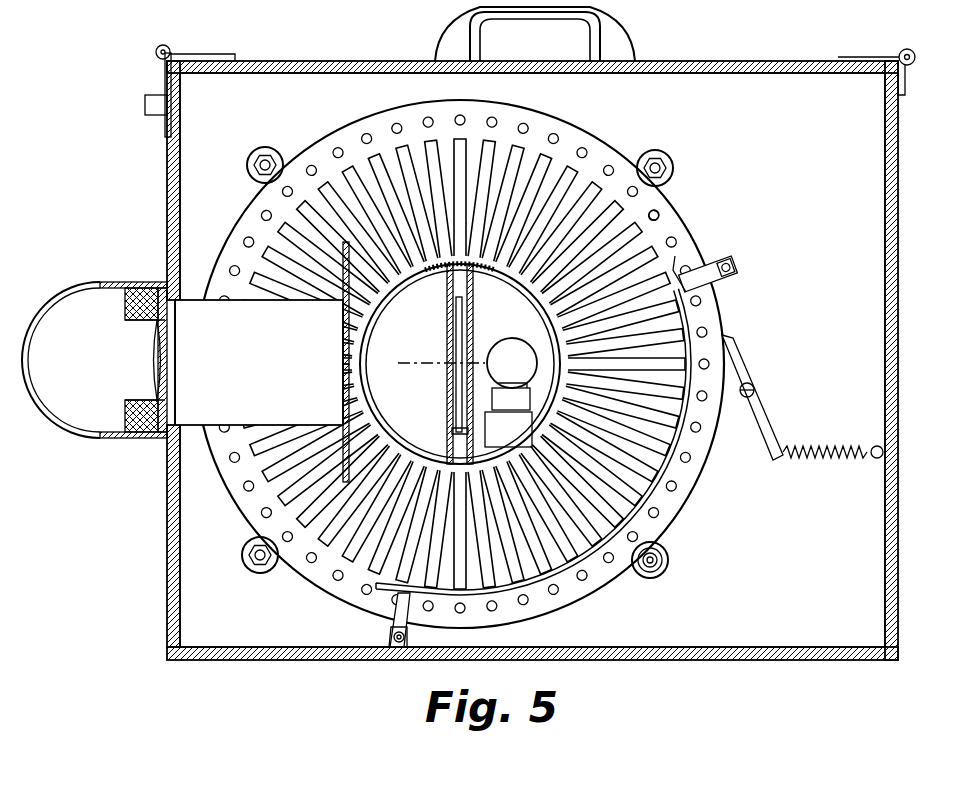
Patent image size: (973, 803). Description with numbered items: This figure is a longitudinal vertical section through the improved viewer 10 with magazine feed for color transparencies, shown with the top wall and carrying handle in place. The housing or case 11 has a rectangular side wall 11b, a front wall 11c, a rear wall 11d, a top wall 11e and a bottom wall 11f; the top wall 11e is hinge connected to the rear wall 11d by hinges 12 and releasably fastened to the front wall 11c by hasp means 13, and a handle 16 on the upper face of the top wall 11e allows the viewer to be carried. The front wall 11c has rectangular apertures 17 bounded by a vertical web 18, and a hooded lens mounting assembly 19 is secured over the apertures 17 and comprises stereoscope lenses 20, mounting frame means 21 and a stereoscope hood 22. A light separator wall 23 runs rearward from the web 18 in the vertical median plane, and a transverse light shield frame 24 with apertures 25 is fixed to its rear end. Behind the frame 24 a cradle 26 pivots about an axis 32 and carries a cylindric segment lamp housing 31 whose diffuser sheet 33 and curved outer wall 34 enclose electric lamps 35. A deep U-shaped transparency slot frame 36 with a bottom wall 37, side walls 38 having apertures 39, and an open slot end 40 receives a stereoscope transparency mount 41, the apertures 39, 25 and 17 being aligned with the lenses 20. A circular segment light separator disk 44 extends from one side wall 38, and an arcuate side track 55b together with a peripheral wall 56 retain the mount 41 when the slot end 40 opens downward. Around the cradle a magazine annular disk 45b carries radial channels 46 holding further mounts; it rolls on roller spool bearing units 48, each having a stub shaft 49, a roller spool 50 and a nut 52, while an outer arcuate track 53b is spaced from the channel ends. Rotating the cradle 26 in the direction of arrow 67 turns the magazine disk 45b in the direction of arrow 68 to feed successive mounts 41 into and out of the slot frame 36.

The viewer 10 is at (539, 374).
The housing or case 11 is at (539, 356).
The side wall 11b is at (532, 360).
The front wall 11c is at (185, 109).
The rear wall 11d is at (884, 210).
The top wall 11e is at (776, 73).
The bottom wall 11f is at (771, 647).
The hinges 12 is at (915, 55).
The hasp means 13 is at (152, 61).
The handle 16 is at (628, 33).
The apertures 17 is at (182, 426).
The vertical web 18 is at (180, 343).
The hooded lens mounting assembly 19 is at (112, 280).
The stereoscope lenses 20 is at (150, 350).
The mounting frame means 21 is at (136, 442).
The stereoscope hood 22 is at (68, 428).
The light separator wall 23 is at (259, 362).
The light shield frame 24 is at (342, 312).
The apertures 25 is at (342, 378).
The cradle 26 is at (460, 364).
The electric lamp housing 31 is at (515, 298).
The axis of oscillation 32 is at (457, 356).
The light diffuser sheet 33 is at (472, 332).
The outer wall 34 is at (527, 324).
The electric lamps 35 is at (512, 374).
The transparency slot frame 36 is at (446, 306).
The bottom wall 37 is at (442, 433).
The side walls 38 is at (448, 288).
The aperture 39 is at (453, 329).
The open slot end 40 is at (458, 270).
The stereoscope transparency mount 41 is at (493, 130).
The light separator disk 44 is at (389, 372).
The magazine annular disk 45b is at (664, 198).
The radial channels 46 is at (662, 224).
The roller spool bearing unit 48 is at (670, 564).
The stub shaft 49 is at (660, 576).
The roller spool 50 is at (662, 544).
The nut 52 is at (644, 576).
The arcuate track 53b is at (700, 313).
The arcuate side track 55b is at (372, 350).
The peripheral wall 56 is at (480, 443).
The arrow 67 is at (423, 313).
The arrow 68 is at (360, 139).